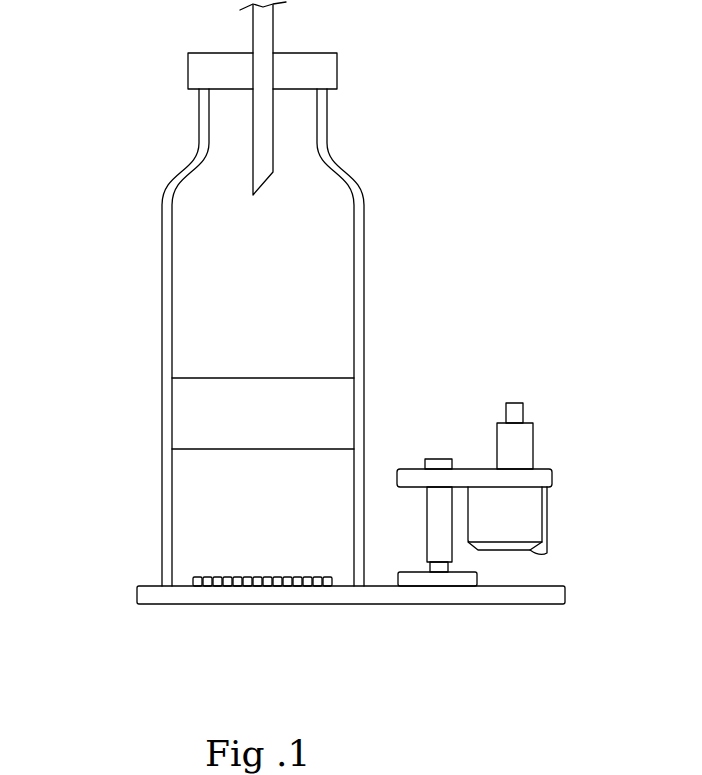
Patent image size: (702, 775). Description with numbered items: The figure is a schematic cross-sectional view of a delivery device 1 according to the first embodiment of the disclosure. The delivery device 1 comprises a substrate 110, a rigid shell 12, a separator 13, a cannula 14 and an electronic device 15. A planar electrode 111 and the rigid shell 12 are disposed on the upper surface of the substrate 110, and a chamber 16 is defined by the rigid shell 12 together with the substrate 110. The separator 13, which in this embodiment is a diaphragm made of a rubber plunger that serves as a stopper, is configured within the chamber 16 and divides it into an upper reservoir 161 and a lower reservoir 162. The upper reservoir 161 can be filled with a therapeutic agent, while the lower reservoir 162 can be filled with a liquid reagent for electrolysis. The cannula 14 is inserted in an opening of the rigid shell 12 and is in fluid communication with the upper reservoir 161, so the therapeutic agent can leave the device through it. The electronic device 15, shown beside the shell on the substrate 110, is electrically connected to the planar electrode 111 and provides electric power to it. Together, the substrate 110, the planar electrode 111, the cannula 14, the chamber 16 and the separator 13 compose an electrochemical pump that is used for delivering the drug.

The delivery device 1 is at (510, 55).
The rigid shell 12 is at (356, 268).
The separator 13 is at (348, 412).
The cannula 14 is at (273, 30).
The electronic device 15 is at (528, 517).
The chamber 16 is at (198, 337).
The upper reservoir 161 is at (200, 263).
The lower reservoir 162 is at (208, 513).
The substrate 110 is at (382, 594).
The planar electrode 111 is at (252, 580).